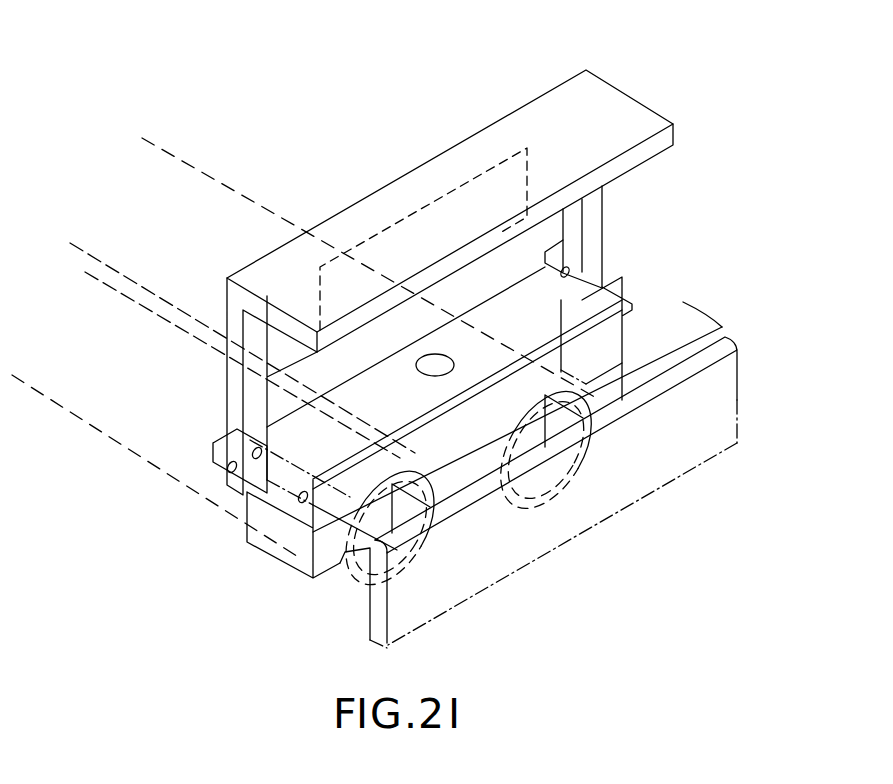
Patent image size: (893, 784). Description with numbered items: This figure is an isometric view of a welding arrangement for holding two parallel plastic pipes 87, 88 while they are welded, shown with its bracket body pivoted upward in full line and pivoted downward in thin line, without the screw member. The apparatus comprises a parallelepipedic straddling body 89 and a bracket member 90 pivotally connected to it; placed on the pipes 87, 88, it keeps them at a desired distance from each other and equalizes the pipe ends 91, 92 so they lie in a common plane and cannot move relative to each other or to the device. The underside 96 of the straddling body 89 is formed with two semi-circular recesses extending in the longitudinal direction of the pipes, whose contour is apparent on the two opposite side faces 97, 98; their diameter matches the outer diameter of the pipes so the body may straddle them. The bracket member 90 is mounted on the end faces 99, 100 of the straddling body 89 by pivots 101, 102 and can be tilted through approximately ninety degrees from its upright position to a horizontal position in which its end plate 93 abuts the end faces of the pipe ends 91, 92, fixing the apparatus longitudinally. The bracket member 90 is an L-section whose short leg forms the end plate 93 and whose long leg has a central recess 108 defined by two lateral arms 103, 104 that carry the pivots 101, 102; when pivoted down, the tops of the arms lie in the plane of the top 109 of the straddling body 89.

The plastic pipe 87 is at (236, 188).
The plastic pipe 88 is at (78, 410).
The straddling body 89 is at (290, 585).
The bracket member 90 is at (539, 73).
The pipe end 91 is at (563, 498).
The pipe end 92 is at (413, 625).
The end plate 93 is at (621, 106).
The underside 96 is at (350, 556).
The side face 97 is at (722, 328).
The side face 98 is at (326, 392).
The end face 99 is at (600, 360).
The end face 100 is at (273, 527).
The pivot 101 is at (582, 258).
The pivot 102 is at (230, 473).
The lateral arm 103 is at (590, 213).
The lateral arm 104 is at (233, 375).
The central recess 108 is at (472, 236).
The top 109 is at (578, 308).